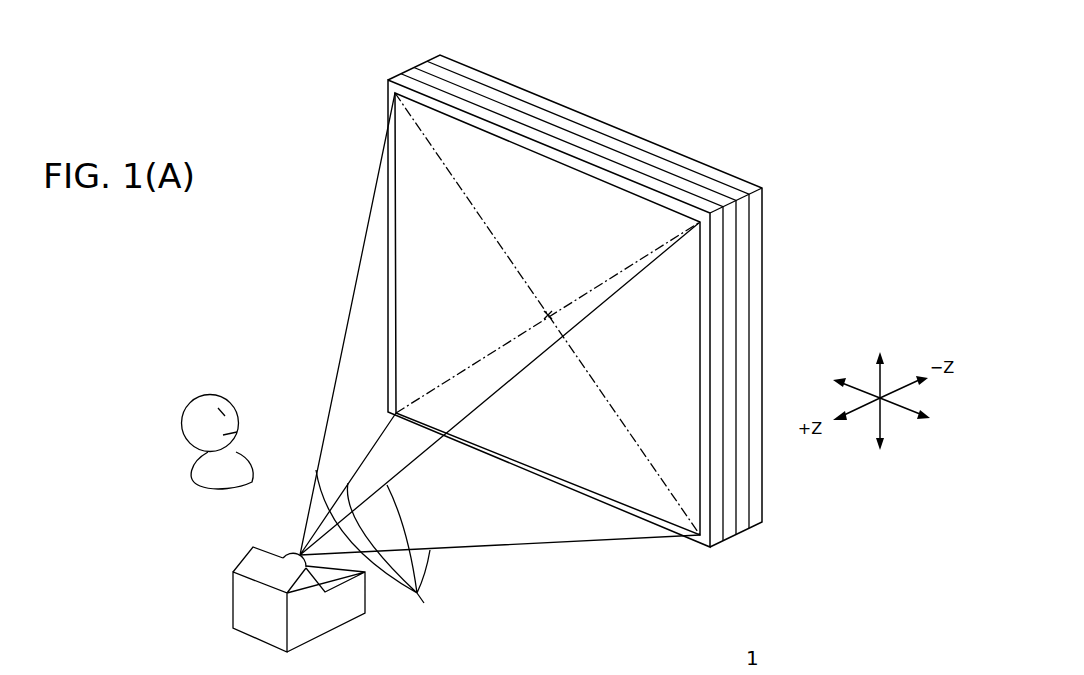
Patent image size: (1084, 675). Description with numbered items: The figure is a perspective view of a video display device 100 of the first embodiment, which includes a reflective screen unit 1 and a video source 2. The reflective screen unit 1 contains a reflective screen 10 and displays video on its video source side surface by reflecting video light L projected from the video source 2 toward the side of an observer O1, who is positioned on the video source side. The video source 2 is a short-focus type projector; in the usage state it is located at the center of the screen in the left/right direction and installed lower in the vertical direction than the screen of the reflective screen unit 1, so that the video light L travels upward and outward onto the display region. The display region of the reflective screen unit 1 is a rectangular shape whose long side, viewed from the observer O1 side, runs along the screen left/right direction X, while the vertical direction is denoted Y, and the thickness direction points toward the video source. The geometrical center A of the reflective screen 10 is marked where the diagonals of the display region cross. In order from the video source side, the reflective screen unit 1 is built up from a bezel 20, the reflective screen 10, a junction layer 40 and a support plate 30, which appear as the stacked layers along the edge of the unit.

The reflective screen unit 1 is at (608, 311).
The video display device 100 is at (713, 137).
The reflective screen 10 is at (727, 540).
The bezel 20 is at (555, 310).
The support plate 30 is at (762, 523).
The junction layer 40 is at (743, 532).
The video source 2 is at (263, 627).
The observer O1 is at (193, 406).
The geometrical center A is at (548, 313).
The video light L is at (500, 356).
The X direction X is at (908, 413).
The Y direction Y is at (882, 373).